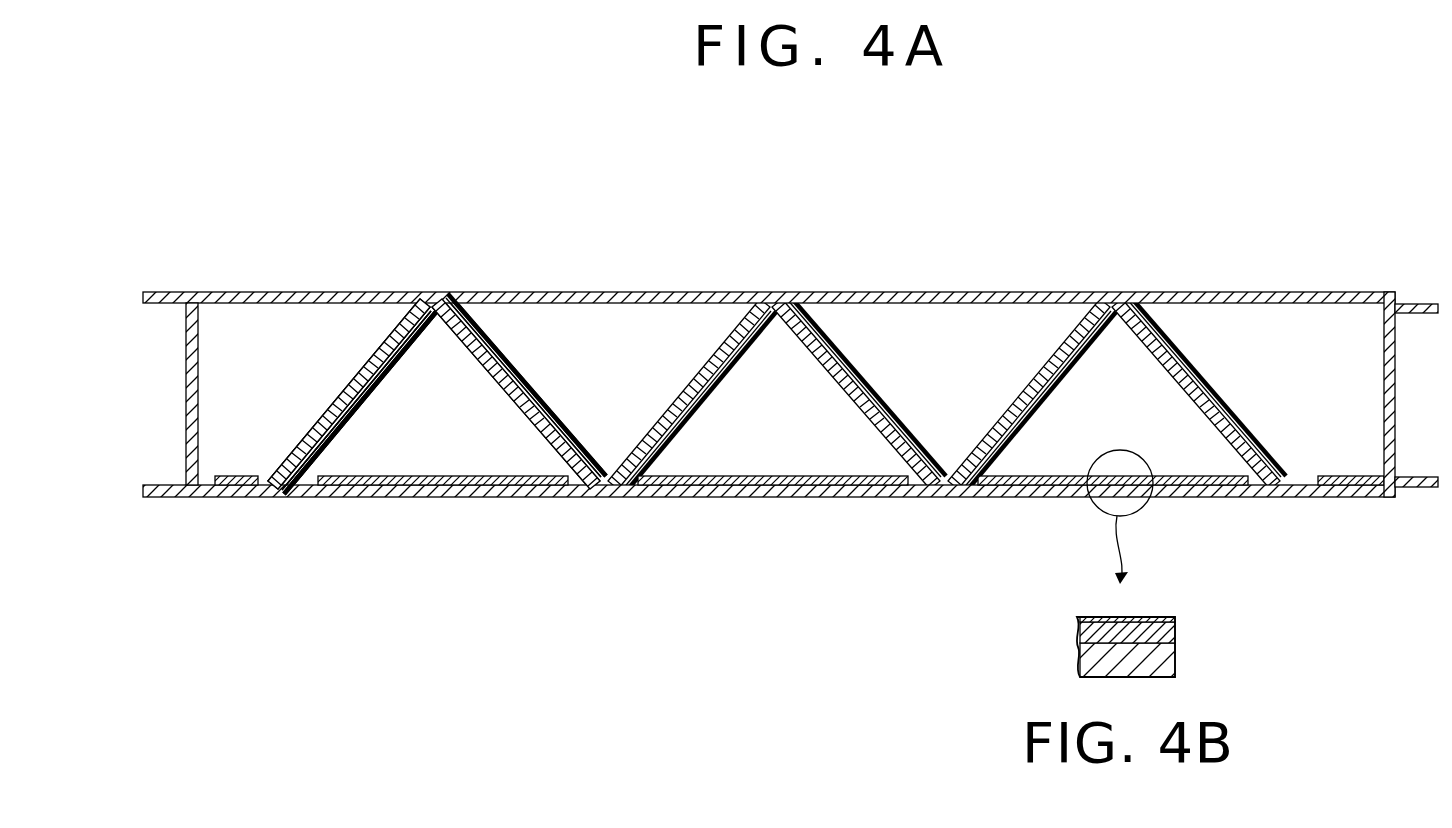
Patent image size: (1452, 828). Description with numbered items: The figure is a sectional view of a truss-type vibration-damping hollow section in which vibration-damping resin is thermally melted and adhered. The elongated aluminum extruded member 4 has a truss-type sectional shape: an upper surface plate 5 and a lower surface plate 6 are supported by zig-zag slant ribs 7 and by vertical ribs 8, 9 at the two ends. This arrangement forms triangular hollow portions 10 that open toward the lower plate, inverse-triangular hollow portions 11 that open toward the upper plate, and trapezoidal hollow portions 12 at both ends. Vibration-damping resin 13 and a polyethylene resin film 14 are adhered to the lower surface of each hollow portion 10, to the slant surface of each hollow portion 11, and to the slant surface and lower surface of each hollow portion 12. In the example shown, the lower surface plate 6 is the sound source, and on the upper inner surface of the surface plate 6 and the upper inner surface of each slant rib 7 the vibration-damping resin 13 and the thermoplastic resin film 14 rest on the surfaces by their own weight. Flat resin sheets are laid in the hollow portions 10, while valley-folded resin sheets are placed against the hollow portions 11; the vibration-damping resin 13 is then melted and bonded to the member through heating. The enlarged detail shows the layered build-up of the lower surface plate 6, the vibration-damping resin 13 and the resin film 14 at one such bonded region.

In FIG. 4A, the aluminum extruded member 4 is at (743, 262).
In FIG. 4A, the upper surface plate 5 is at (535, 292).
In FIG. 4A, the lower surface plate 6 is at (526, 494).
In FIG. 4B, the lower surface plate 6 is at (1165, 662).
In FIG. 4A, the slant rib 7 is at (393, 340).
In FIG. 4A, the vertical rib 8 is at (186, 388).
In FIG. 4A, the vertical rib 9 is at (1395, 395).
In FIG. 4A, the triangular hollow portion 10 is at (452, 452).
In FIG. 4A, the inverse-triangular hollow portion 11 is at (617, 382).
In FIG. 4A, the trapezoidal hollow portion 12 is at (277, 380).
In FIG. 4A, the vibration-damping resin 13 is at (799, 480).
In FIG. 4B, the vibration-damping resin 13 is at (1165, 632).
In FIG. 4B, the polyethylene resin film 14 is at (1175, 619).